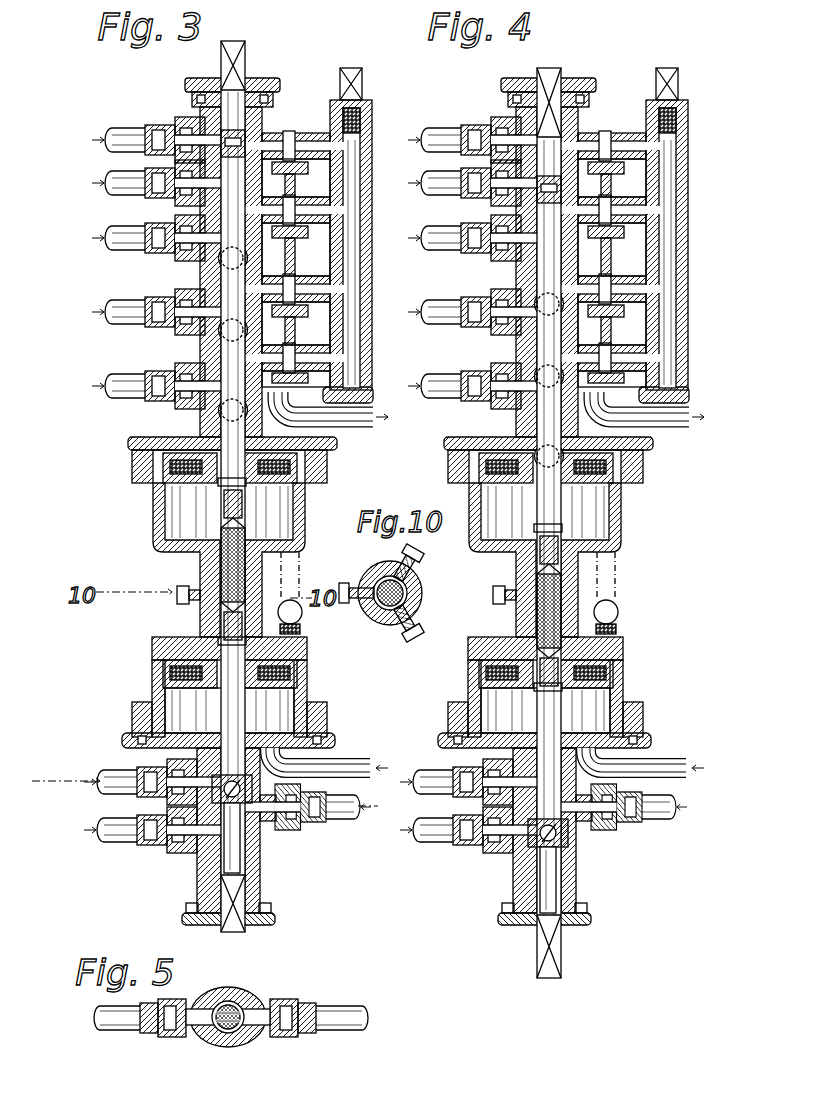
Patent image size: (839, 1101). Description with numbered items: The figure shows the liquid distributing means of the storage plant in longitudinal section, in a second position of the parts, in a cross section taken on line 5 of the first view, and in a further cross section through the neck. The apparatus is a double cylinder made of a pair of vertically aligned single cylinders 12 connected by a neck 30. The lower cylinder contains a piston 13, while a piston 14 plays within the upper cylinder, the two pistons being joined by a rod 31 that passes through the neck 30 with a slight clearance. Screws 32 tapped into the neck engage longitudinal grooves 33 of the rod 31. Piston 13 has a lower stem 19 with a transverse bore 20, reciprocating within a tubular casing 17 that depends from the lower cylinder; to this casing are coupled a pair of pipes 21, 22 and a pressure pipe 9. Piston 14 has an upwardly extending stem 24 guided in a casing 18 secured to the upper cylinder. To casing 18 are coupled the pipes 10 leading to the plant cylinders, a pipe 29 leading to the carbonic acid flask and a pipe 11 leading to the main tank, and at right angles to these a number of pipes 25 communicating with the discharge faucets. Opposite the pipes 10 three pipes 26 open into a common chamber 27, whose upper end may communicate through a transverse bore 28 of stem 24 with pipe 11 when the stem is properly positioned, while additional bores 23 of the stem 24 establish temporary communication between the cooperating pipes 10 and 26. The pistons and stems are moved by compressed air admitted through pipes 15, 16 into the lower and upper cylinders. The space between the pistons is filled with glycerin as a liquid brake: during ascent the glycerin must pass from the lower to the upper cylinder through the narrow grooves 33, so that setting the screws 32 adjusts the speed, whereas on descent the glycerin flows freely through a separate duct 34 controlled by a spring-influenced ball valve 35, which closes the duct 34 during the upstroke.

In FIG. 3, the section line 5— 5 is at (206, 794).
In FIG. 3, the pressure pipe 9 is at (328, 815).
In FIG. 4, the pressure pipe 9 is at (664, 815).
In FIG. 5, the pressure pipe 9 is at (312, 1034).
In FIG. 3, the pipes 10 is at (122, 312).
In FIG. 4, the pipes 10 is at (430, 386).
In FIG. 3, the pipe 11 is at (118, 133).
In FIG. 4, the pipe 11 is at (435, 133).
In FIG. 3, the cylinders 12 is at (175, 527).
In FIG. 4, the cylinders 12 is at (472, 540).
In FIG. 3, the piston 13 is at (306, 672).
In FIG. 4, the piston 13 is at (622, 692).
In FIG. 3, the piston 14 is at (292, 494).
In FIG. 4, the piston 14 is at (606, 512).
In FIG. 3, the pipe 15 is at (352, 770).
In FIG. 4, the pipe 15 is at (665, 770).
In FIG. 3, the pipe 16 is at (352, 422).
In FIG. 4, the pipe 16 is at (672, 424).
In FIG. 3, the tubular casing 17 is at (197, 883).
In FIG. 4, the tubular casing 17 is at (513, 881).
In FIG. 3, the casing 18 is at (201, 432).
In FIG. 4, the casing 18 is at (564, 396).
In FIG. 3, the lower stem 19 is at (237, 862).
In FIG. 4, the lower stem 19 is at (553, 866).
In FIG. 5, the lower stem 19 is at (240, 1038).
In FIG. 3, the transverse bore 20 is at (247, 801).
In FIG. 4, the transverse bore 20 is at (566, 830).
In FIG. 5, the transverse bore 20 is at (216, 1040).
In FIG. 3, the pipe 21 is at (143, 836).
In FIG. 4, the pipe 21 is at (462, 836).
In FIG. 3, the pipe 22 is at (110, 782).
In FIG. 4, the pipe 22 is at (426, 782).
In FIG. 5, the pipe 22 is at (126, 1032).
In FIG. 3, the bores 23 is at (213, 276).
In FIG. 4, the bores 23 is at (527, 292).
In FIG. 3, the stem 24 is at (238, 118).
In FIG. 4, the stem 24 is at (572, 140).
In FIG. 3, the pipes 25 is at (215, 362).
In FIG. 4, the pipes 25 is at (530, 368).
In FIG. 3, the pipes 26 is at (290, 286).
In FIG. 4, the pipes 26 is at (606, 286).
In FIG. 3, the common chamber 27 is at (362, 276).
In FIG. 4, the common chamber 27 is at (678, 276).
In FIG. 3, the transverse bore 28 is at (260, 140).
In FIG. 4, the transverse bore 28 is at (532, 172).
In FIG. 3, the pipe 29 is at (112, 183).
In FIG. 4, the pipe 29 is at (428, 184).
In FIG. 3, the neck 30 is at (186, 586).
In FIG. 10, the neck 30 is at (382, 569).
In FIG. 3, the rod 31 is at (250, 582).
In FIG. 3, the screws 32 is at (190, 603).
In FIG. 4, the screws 32 is at (498, 586).
In FIG. 10, the screws 32 is at (402, 629).
In FIG. 4, the longitudinal grooves 33 is at (537, 613).
In FIG. 10, the longitudinal grooves 33 is at (423, 597).
In FIG. 3, the duct 34 is at (302, 620).
In FIG. 4, the duct 34 is at (612, 584).
In FIG. 4, the ball valve 35 is at (618, 614).